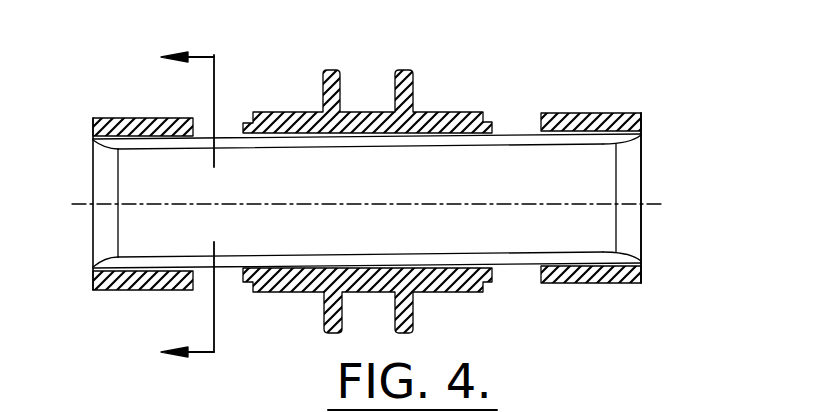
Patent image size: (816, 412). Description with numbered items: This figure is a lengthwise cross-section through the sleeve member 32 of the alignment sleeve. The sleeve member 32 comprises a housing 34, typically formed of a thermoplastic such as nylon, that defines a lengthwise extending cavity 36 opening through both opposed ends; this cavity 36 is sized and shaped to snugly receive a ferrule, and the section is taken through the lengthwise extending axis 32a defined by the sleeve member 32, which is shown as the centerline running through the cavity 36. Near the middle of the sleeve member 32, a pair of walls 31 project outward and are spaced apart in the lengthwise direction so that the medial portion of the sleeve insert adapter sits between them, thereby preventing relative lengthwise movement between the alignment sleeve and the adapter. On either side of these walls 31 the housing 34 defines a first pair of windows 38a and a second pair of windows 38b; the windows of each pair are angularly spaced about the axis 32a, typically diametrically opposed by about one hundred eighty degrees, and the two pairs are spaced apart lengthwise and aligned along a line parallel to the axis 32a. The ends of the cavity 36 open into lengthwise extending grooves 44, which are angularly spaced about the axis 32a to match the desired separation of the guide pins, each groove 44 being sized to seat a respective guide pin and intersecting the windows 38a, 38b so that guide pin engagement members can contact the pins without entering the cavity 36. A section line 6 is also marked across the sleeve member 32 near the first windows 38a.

The sleeve member 32 is at (636, 59).
The lengthwise extending axis 32a is at (652, 198).
The housing 34 is at (626, 111).
The lengthwise extending cavity 36 is at (600, 227).
The first pair of windows 38a is at (203, 127).
The second pair of windows 38b is at (531, 122).
The walls 31 is at (322, 72).
The lengthwise extending grooves 44 is at (108, 145).
The section line 6- 6 is at (187, 207).